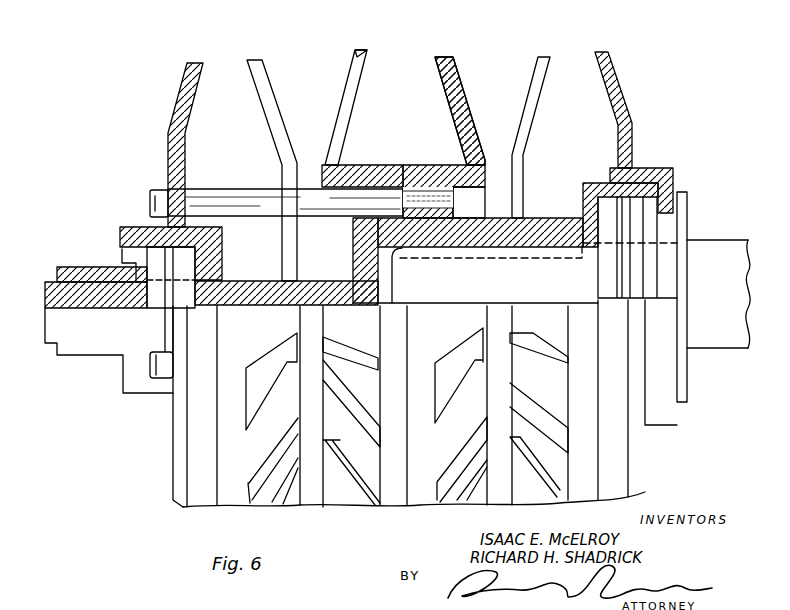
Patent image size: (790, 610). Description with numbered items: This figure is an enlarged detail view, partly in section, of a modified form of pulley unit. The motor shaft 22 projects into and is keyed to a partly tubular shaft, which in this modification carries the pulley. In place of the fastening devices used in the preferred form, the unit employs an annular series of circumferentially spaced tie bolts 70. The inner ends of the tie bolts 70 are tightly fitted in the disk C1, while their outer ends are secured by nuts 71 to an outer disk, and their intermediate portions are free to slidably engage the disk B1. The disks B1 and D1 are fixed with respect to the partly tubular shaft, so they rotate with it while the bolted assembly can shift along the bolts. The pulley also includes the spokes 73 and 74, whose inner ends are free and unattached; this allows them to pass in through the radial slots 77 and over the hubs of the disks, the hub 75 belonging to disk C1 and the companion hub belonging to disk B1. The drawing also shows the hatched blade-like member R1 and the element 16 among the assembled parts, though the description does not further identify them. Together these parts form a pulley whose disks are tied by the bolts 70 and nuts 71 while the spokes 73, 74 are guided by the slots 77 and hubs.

The hatched fan blade R1 is at (257, 74).
The disk B1 is at (357, 56).
The disk C1 is at (452, 58).
The disk D1 is at (602, 70).
The spacer block 16 is at (355, 166).
The shaft 22 is at (725, 248).
The tie bolts 70 is at (213, 202).
The nuts 71 is at (160, 380).
The spokes 73 is at (530, 123).
The spokes 74 is at (270, 110).
The hub 75 is at (427, 178).
The radial slots 77 is at (350, 100).